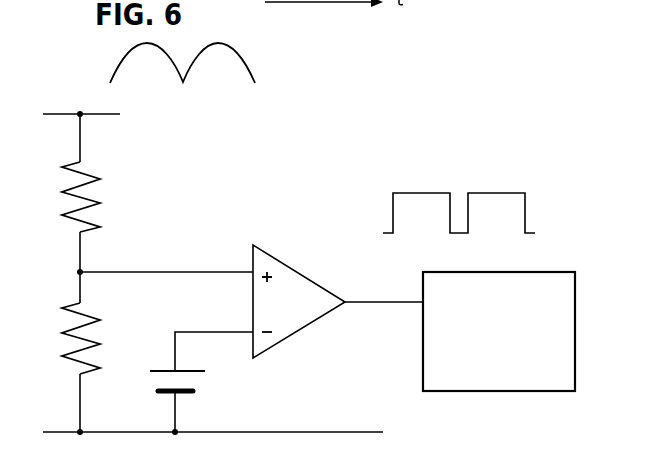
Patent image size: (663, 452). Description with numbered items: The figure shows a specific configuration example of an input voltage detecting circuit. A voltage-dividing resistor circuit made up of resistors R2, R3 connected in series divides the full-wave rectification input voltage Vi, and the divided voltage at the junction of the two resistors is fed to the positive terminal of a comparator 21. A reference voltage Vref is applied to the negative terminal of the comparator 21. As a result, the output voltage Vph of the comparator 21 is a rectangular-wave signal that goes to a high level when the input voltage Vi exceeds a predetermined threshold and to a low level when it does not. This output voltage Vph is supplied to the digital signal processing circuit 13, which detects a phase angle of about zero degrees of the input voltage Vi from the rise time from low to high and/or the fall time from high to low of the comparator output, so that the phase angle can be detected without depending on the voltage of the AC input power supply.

The comparator 21 is at (293, 267).
The digital signal processing circuit 13 is at (575, 272).
The resistor R2 is at (65, 197).
The resistor R3 is at (65, 338).
The input voltage Vi is at (81, 99).
The output voltage Vph is at (412, 237).
The reference voltage Vref is at (199, 388).